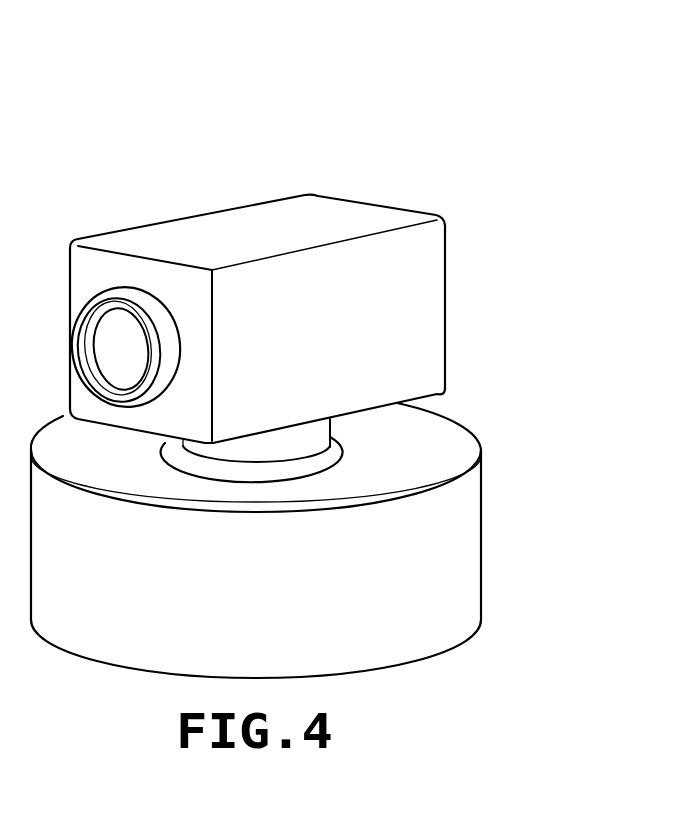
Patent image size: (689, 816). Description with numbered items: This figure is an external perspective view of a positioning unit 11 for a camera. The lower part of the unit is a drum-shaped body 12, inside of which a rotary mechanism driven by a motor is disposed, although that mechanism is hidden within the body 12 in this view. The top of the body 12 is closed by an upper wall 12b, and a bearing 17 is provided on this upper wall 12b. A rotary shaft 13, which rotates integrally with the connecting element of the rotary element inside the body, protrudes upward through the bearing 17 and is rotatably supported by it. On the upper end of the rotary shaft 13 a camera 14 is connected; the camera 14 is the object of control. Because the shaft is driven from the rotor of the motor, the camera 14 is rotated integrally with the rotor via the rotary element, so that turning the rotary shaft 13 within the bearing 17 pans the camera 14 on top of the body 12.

The positioning unit 11 is at (309, 282).
The body 12 is at (317, 537).
The upper wall 12b is at (452, 440).
The rotary shaft 13 is at (313, 437).
The camera 14 is at (222, 225).
The bearing 17 is at (262, 470).